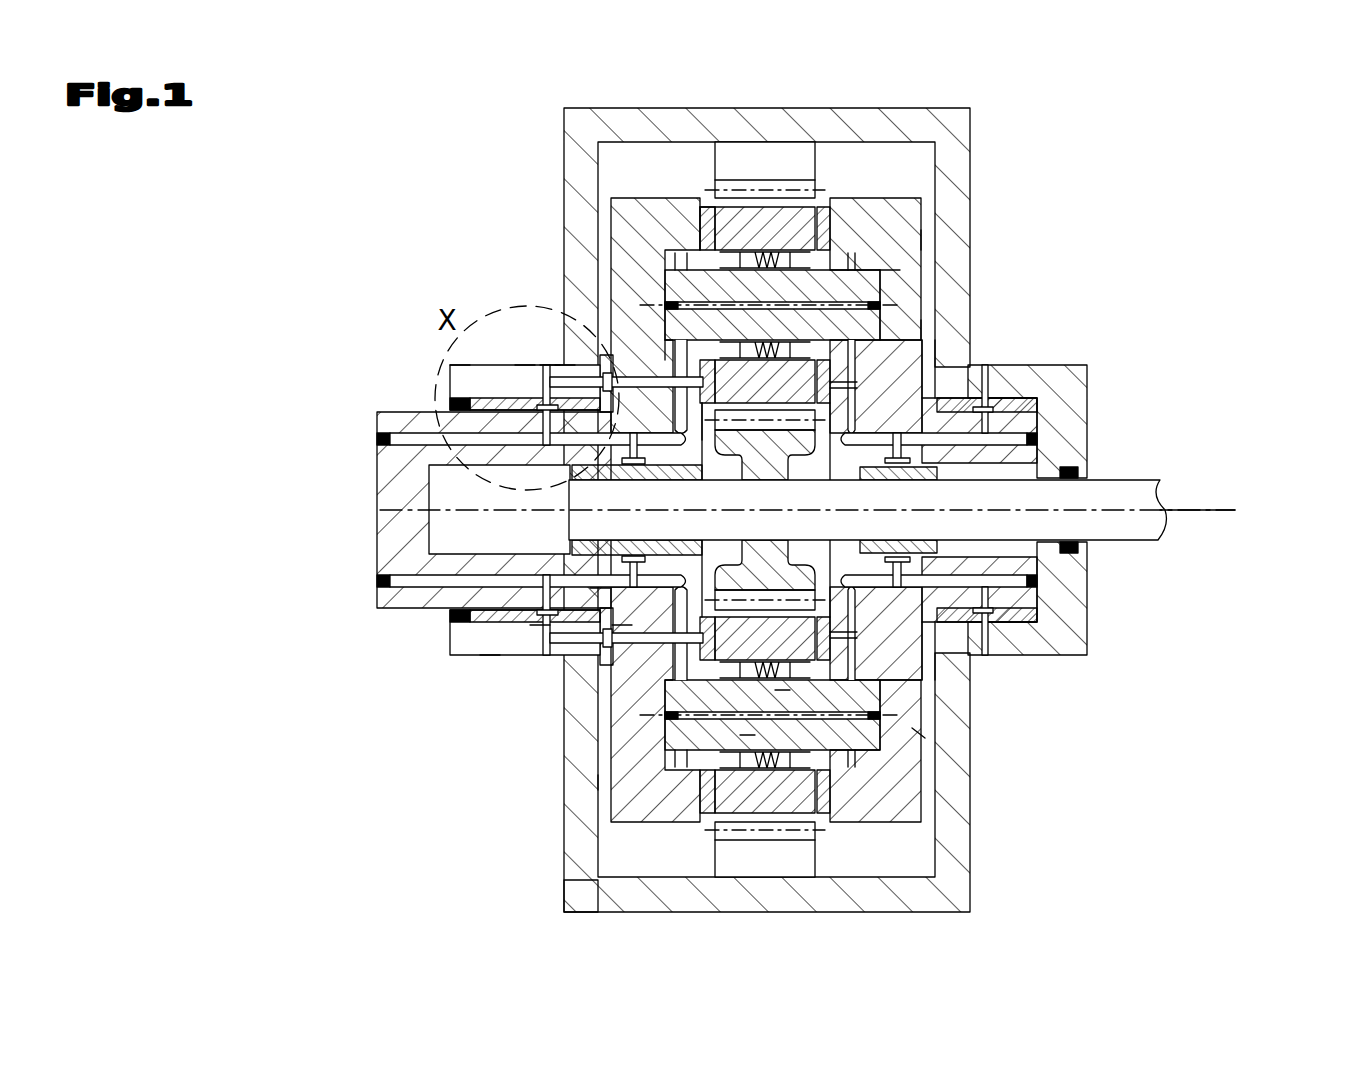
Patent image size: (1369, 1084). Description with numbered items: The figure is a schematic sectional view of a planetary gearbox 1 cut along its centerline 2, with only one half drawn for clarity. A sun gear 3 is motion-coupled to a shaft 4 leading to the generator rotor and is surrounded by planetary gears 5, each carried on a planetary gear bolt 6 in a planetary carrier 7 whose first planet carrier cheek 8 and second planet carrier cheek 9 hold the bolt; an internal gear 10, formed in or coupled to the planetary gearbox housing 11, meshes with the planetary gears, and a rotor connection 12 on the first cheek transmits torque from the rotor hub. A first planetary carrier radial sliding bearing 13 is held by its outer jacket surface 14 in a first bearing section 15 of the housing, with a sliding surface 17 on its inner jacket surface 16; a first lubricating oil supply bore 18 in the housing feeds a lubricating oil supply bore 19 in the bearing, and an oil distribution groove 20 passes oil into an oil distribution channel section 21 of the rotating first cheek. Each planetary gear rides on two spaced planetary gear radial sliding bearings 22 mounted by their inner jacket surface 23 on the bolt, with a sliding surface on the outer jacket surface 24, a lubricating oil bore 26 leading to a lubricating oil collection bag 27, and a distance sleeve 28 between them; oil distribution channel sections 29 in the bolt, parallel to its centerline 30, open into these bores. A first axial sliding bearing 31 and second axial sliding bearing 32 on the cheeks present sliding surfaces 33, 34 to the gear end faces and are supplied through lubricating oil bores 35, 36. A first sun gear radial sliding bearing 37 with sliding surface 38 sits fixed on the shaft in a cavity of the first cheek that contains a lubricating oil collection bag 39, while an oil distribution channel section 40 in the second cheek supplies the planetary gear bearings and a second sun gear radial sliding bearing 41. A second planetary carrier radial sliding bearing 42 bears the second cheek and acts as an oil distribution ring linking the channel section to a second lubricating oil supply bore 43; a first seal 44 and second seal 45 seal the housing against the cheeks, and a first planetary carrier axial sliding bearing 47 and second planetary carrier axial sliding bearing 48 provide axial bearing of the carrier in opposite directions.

The planetary gearbox 1 is at (1246, 140).
The centerline 2 is at (1210, 500).
The sun gear 3 is at (790, 550).
The shaft 4 is at (1123, 523).
The planetary gear 5 is at (772, 220).
The planetary gear bolt 6 is at (900, 268).
The planetary carrier 7 is at (912, 240).
The first planet carrier cheek 8 is at (698, 210).
The second planet carrier cheek 9 is at (900, 200).
The internal gear 10 is at (780, 165).
The planetary gearbox housing 11 is at (572, 855).
The rotor connection 12 is at (368, 384).
The first planetary carrier radial sliding bearing 13 is at (490, 655).
The outer jacket surface 14 is at (540, 625).
The first bearing section 15 is at (480, 600).
The inner jacket surface 16 is at (505, 585).
The sliding surface 17 is at (470, 440).
The first lubricating oil supply bore 18 is at (562, 366).
The lubricating oil supply bore 19 is at (528, 362).
The oil distribution groove 20 is at (456, 362).
The oil distribution channel section 21 is at (540, 432).
The planetary gear radial sliding bearing 22 is at (722, 243).
The inner jacket surface 23 is at (694, 216).
The outer jacket surface 24 is at (712, 225).
The lubricating oil bore 26 is at (688, 340).
The lubricating oil collection bag 27 is at (652, 358).
The distance sleeve 28 is at (760, 670).
The oil distribution channel section 29 is at (838, 298).
The centerline 30 is at (918, 733).
The first axial sliding bearing 31 is at (700, 243).
The second axial sliding bearing 32 is at (825, 205).
The sliding surface 33 is at (748, 738).
The sliding surface 34 is at (782, 692).
The lubricating oil bore 35 is at (600, 783).
The lubricating oil bore 36 is at (935, 326).
The first sun gear radial sliding bearing 37 is at (600, 472).
The sliding surface 38 is at (600, 592).
The lubricating oil collection bag 39 is at (622, 626).
The oil distribution channel section 40 is at (928, 360).
The second sun gear radial sliding bearing 41 is at (1053, 606).
The second planetary carrier radial sliding bearing 42 is at (1045, 392).
The second lubricating oil supply bore 43 is at (1020, 366).
The first seal 44 is at (447, 637).
The second seal 45 is at (1078, 462).
The first planetary carrier axial sliding bearing 47 is at (566, 364).
The second planetary carrier axial sliding bearing 48 is at (986, 364).